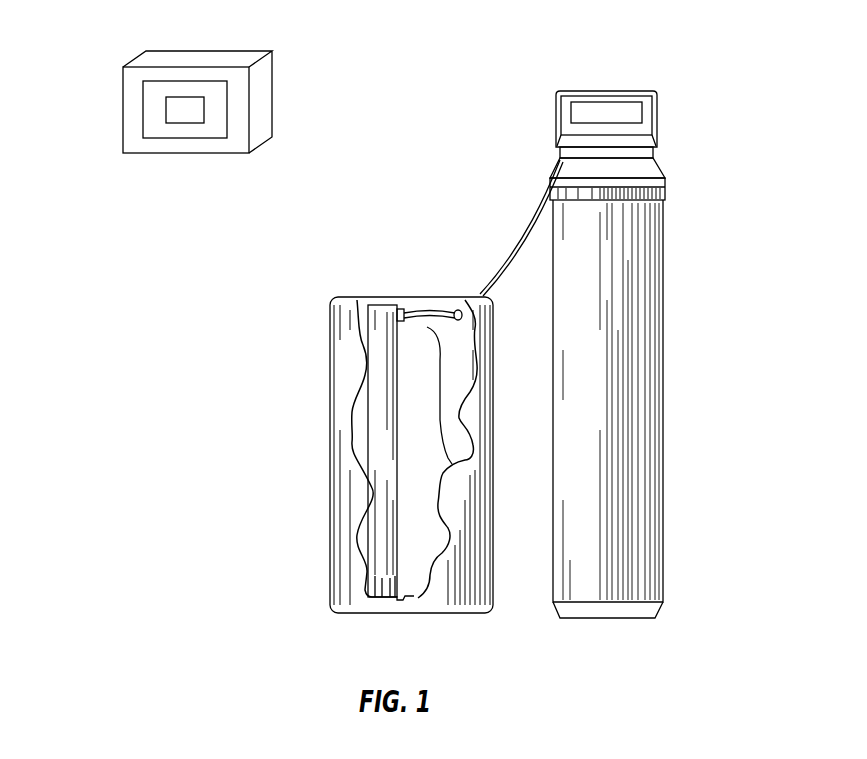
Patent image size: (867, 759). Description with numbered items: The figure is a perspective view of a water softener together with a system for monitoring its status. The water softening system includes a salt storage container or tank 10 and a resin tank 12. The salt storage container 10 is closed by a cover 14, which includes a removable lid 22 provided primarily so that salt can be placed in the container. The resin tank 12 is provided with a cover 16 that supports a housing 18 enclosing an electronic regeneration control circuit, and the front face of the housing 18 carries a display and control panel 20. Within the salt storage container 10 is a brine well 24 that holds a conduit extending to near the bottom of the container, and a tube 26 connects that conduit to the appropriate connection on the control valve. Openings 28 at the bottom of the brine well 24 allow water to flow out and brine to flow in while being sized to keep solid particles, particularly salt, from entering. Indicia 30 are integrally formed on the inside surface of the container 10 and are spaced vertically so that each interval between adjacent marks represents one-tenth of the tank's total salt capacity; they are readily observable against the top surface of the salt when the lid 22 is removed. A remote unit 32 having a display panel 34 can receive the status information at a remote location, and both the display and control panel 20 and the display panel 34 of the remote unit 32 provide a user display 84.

The salt storage container 10 is at (324, 342).
The resin tank 12 is at (663, 310).
The cover 14 is at (350, 295).
The cover 16 is at (640, 172).
The housing 18 is at (655, 107).
The display and control panel 20 is at (578, 112).
The removable lid 22 is at (408, 288).
The brine well 24 is at (372, 423).
The tube 26 is at (432, 312).
The openings 28 is at (382, 588).
The indicia 30 is at (450, 462).
The remote unit 32 is at (134, 62).
The display panel 34 is at (148, 102).
The user display 84 is at (176, 113).